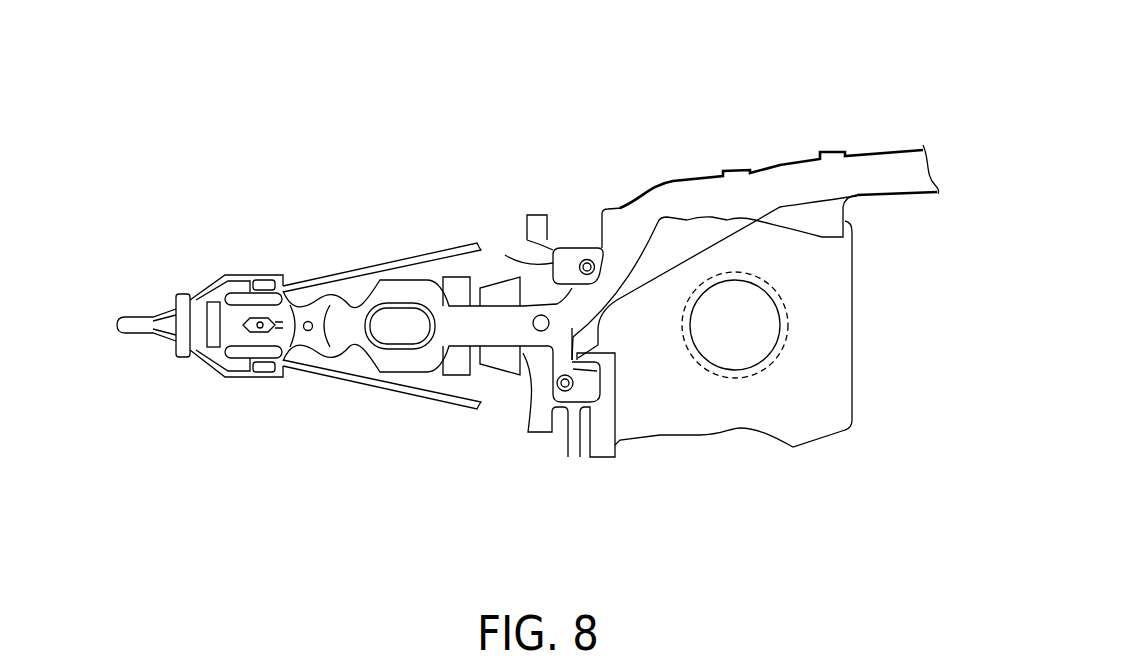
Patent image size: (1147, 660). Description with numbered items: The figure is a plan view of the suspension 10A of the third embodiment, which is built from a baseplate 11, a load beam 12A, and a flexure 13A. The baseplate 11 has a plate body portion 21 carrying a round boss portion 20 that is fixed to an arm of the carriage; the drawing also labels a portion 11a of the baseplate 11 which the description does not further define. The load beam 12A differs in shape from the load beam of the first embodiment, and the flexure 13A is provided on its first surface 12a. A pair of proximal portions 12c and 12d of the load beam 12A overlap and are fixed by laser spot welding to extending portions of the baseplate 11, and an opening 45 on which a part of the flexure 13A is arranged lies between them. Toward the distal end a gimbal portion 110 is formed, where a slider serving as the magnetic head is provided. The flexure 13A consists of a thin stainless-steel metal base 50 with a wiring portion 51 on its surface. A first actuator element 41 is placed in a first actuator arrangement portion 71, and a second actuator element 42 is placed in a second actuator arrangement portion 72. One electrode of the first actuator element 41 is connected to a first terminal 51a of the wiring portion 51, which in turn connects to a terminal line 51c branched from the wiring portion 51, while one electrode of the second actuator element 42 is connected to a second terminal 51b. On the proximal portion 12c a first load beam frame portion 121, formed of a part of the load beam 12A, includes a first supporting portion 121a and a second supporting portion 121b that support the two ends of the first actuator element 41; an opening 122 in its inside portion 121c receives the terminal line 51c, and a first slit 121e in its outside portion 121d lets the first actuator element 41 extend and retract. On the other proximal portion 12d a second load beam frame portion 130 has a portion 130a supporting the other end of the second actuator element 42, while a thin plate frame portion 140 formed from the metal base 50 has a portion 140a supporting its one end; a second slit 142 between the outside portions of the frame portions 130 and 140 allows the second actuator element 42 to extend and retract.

The suspension 10A is at (372, 210).
The gimbal portion 110 is at (240, 398).
The baseplate 11 is at (818, 425).
The housing upper wall 11a is at (778, 236).
The load beam 12A is at (387, 386).
The first surface 12a is at (443, 380).
The proximal portion 12c is at (545, 368).
The proximal portion 12d is at (550, 256).
The flexure 13A is at (673, 176).
The second load beam frame portion 130 is at (565, 198).
The supporting portion 130a is at (523, 236).
The thin plate frame portion 140 is at (593, 215).
The supporting portion 140a is at (606, 246).
The second slit 142 is at (575, 243).
The second actuator arrangement portion 72 is at (560, 225).
The first actuator arrangement portion 71 is at (574, 442).
The second actuator element 42 is at (533, 214).
The first actuator element 41 is at (592, 400).
The opening 45 is at (520, 355).
The metal base 50 is at (667, 232).
The wiring portion 51 is at (500, 323).
The first terminal 51a is at (607, 400).
The second terminal 51b is at (553, 265).
The terminal line 51c is at (513, 385).
The boss portion 20 is at (763, 378).
The plate body portion 21 is at (712, 408).
The first load beam frame portion 121 is at (548, 434).
The first supporting portion 121a is at (615, 382).
The second supporting portion 121b is at (559, 424).
The inside portion 121c is at (592, 347).
The outside portion 121d is at (570, 445).
The first slit 121e is at (581, 410).
The opening 122 is at (600, 369).